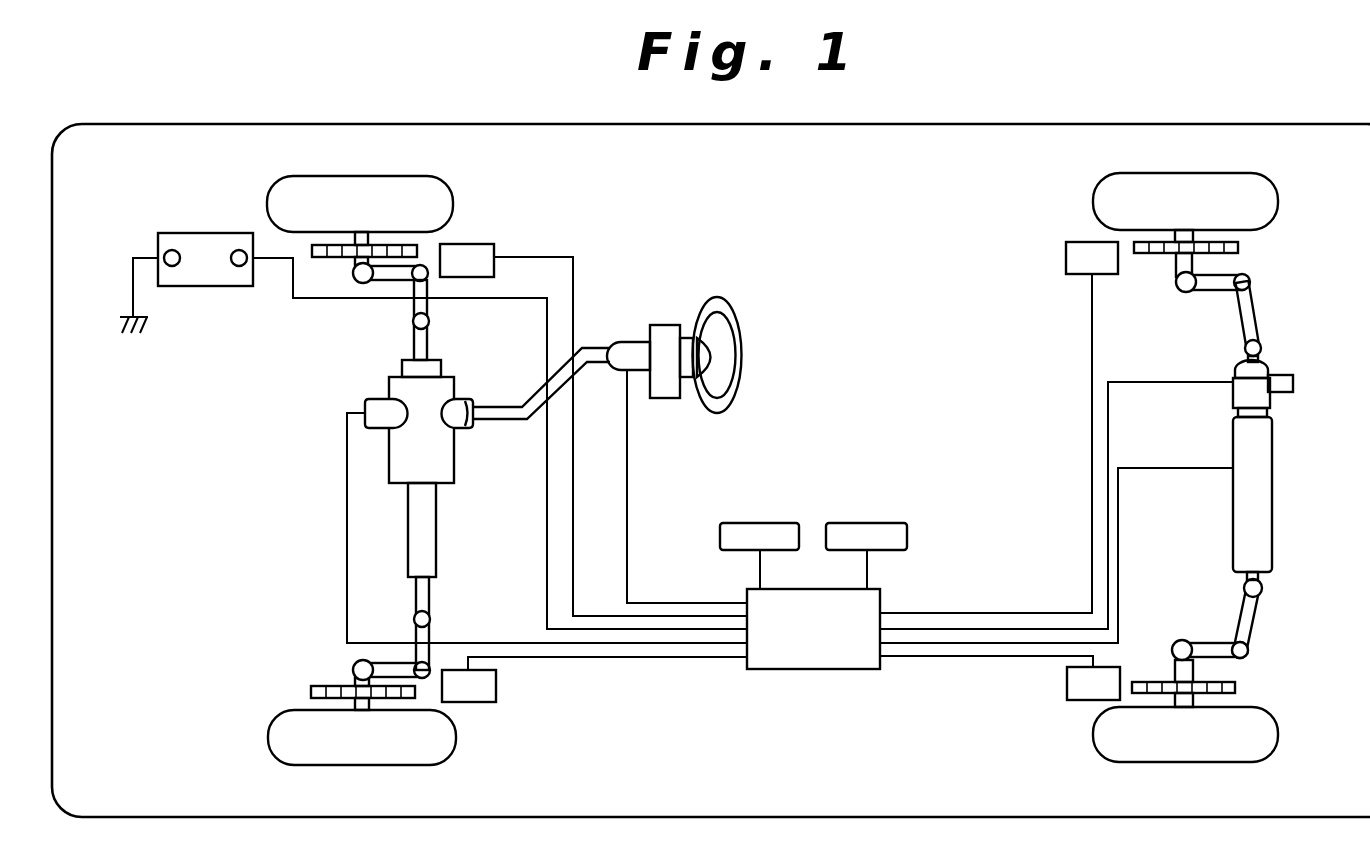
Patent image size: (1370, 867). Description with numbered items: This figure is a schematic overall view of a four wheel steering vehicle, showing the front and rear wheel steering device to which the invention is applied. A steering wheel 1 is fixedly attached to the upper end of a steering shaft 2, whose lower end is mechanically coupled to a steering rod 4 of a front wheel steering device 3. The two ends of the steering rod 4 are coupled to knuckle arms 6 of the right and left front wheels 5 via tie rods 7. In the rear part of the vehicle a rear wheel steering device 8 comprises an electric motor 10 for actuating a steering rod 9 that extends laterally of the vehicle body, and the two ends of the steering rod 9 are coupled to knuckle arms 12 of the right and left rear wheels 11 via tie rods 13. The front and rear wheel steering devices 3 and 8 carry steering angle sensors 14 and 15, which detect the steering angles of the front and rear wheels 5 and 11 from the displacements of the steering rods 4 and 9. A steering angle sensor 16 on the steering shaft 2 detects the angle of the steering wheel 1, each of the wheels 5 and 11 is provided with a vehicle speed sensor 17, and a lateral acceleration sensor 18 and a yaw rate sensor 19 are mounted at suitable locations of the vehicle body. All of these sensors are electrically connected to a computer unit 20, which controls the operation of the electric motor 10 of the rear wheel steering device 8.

The steering wheel 1 is at (727, 298).
The steering shaft 2 is at (515, 423).
The front wheel steering device 3 is at (388, 382).
The steering rod 4 is at (437, 543).
The front wheel 5 is at (268, 196).
The knuckle arm 6 is at (393, 280).
The tie rod 7 is at (428, 307).
The rear wheel steering device 8 is at (1318, 437).
The steering rod 9 is at (1260, 360).
The electric motor 10 is at (1273, 510).
The rear wheel 11 is at (1277, 196).
The knuckle arm 12 is at (1208, 293).
The tie rod 13 is at (1255, 303).
The steering angle sensor 14 is at (363, 403).
The steering angle sensor 15 is at (1295, 381).
The steering angle sensor 16 is at (630, 341).
The vehicle speed sensor 17 is at (473, 244).
The lateral acceleration sensor 18 is at (783, 522).
The yaw rate sensor 19 is at (888, 522).
The computer unit 20 is at (852, 672).